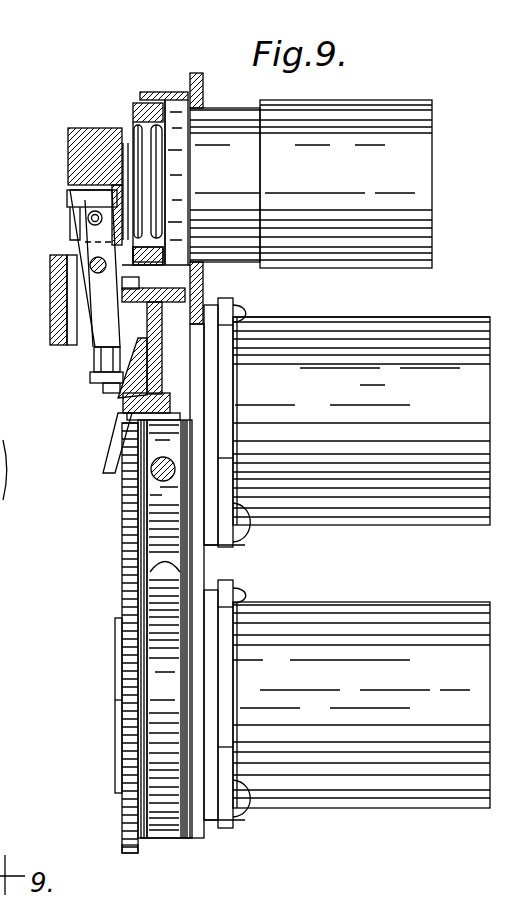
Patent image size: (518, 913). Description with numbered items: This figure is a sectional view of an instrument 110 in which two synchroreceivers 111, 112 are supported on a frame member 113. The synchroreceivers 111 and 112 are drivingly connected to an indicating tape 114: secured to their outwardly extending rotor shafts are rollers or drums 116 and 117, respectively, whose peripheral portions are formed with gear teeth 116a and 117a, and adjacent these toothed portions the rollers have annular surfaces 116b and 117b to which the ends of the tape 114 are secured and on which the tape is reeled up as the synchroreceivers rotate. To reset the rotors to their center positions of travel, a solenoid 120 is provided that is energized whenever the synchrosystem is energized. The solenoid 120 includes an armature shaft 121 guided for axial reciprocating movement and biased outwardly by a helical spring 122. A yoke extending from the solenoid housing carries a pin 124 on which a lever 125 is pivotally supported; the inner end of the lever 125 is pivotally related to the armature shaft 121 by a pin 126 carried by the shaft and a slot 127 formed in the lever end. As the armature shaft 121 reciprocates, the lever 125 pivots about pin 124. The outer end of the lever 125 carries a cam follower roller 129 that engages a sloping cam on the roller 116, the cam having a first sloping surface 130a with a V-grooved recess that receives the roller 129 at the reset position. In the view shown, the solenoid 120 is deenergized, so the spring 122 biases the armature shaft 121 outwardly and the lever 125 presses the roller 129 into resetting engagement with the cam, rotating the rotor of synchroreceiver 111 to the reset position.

The instrument 110 is at (106, 500).
The synchroreceiver 111 is at (378, 512).
The synchroreceiver 112 is at (355, 618).
The frame member 113 is at (204, 287).
The indicating tape 114 is at (140, 560).
The roller 116 is at (124, 535).
The gear teeth 116a is at (160, 266).
The annular surface 116b is at (165, 292).
The roller 117 is at (128, 588).
The gear teeth 117a is at (128, 855).
The annular surface 117b is at (143, 838).
The solenoid 120 is at (372, 116).
The armature shaft 121 is at (80, 143).
The helical spring 122 is at (130, 128).
The pin 124 is at (90, 263).
The lever 125 is at (105, 323).
The pin 126 is at (87, 217).
The slot 127 is at (88, 197).
The cam follower roller 129 is at (90, 378).
The first sloping surface 130a is at (125, 400).